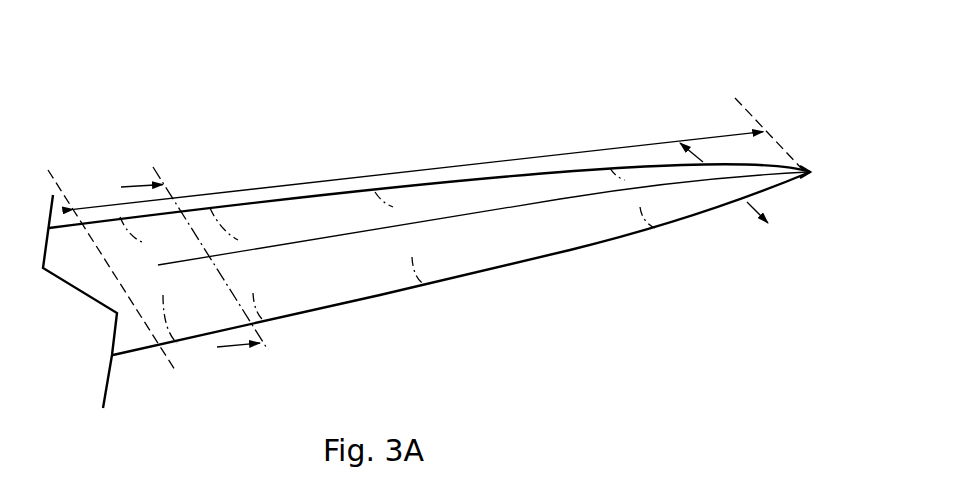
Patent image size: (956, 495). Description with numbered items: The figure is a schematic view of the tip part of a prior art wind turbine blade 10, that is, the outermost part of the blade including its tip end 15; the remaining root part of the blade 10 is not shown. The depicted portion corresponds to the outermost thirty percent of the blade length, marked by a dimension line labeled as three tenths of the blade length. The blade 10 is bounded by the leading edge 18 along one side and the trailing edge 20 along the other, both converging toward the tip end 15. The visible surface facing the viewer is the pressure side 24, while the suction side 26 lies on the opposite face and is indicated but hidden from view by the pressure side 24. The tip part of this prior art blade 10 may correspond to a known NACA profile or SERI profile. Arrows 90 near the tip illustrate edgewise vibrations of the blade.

The blade 10 is at (437, 210).
The tip end 15 is at (813, 173).
The leading edge 18 is at (438, 183).
The trailing edge 20 is at (480, 273).
The pressure side 24 is at (410, 200).
The suction side 26 is at (290, 218).
The arrows 90 is at (739, 180).